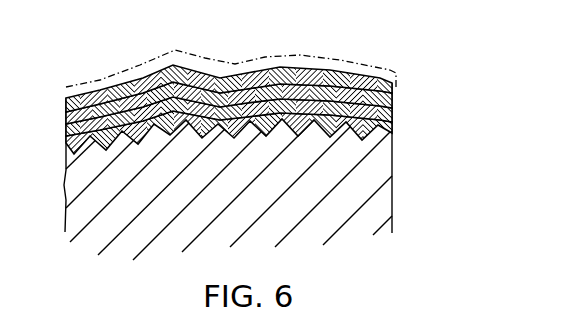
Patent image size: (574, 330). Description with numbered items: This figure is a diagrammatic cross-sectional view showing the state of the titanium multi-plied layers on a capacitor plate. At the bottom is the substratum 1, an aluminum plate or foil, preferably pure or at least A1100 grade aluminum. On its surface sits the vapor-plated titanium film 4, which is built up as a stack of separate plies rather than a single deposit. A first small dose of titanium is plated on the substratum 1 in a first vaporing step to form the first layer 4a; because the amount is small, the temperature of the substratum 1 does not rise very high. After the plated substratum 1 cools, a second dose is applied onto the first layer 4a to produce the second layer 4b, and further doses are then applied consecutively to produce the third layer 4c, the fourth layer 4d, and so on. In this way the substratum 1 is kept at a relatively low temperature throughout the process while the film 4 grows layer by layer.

The substratum 1 is at (383, 213).
The titanium film 4 is at (274, 110).
The first layer 4a is at (392, 132).
The second layer 4b is at (392, 118).
The third layer 4c is at (392, 110).
The fourth layer 4d is at (395, 89).